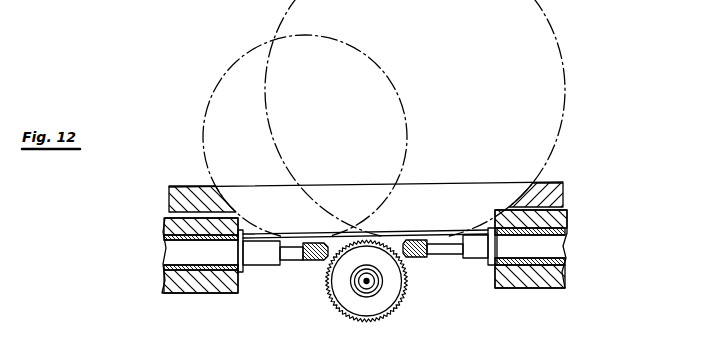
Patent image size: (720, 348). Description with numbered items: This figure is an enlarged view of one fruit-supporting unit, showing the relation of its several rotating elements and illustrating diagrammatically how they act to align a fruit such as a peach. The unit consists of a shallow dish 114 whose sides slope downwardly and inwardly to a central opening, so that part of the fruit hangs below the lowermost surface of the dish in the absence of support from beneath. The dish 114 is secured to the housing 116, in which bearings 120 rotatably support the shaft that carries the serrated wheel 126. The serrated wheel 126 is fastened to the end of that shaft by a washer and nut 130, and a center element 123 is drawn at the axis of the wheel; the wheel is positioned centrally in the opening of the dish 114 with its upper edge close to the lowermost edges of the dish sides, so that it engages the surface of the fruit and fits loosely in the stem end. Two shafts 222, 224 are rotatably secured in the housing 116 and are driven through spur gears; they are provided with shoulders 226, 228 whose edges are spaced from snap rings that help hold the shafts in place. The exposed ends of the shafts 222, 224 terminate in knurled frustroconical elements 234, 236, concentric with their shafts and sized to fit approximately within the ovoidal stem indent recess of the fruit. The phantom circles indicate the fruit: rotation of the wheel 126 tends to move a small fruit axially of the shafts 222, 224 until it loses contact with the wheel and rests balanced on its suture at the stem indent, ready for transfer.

The dish 114 is at (556, 184).
The housing 116 is at (208, 286).
The bearings 120 is at (567, 214).
The axle center 123 is at (367, 279).
The serrated wheel 126 is at (388, 302).
The nut 130 is at (355, 289).
The shaft 222 is at (555, 252).
The shaft 224 is at (178, 250).
The shoulder 226 is at (467, 262).
The shoulder 228 is at (278, 270).
The frustroconical element 234 is at (412, 257).
The frustroconical element 236 is at (320, 262).